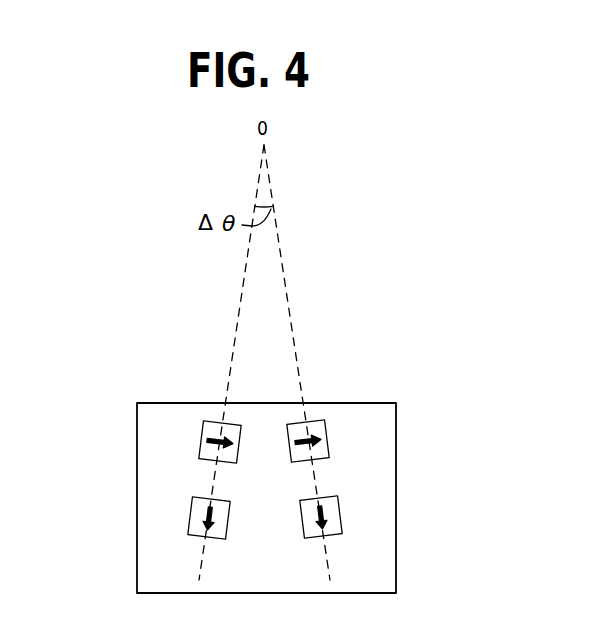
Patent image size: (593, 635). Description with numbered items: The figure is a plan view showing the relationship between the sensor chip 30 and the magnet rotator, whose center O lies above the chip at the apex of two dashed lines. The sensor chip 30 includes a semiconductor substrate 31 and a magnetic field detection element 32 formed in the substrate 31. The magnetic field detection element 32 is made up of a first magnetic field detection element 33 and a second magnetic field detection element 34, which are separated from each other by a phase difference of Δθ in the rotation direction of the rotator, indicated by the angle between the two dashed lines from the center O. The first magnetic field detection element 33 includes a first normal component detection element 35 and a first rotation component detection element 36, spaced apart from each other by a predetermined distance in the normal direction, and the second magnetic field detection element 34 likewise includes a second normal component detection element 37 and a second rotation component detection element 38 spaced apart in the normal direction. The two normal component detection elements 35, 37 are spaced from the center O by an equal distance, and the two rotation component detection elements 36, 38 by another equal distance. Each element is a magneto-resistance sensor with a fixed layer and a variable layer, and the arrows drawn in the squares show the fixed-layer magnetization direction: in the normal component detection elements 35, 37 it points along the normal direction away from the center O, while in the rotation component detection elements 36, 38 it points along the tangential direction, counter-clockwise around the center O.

The sensor chip 30 is at (443, 150).
The semiconductor substrate 31 is at (138, 410).
The magnetic field detection element 32 is at (190, 435).
The first magnetic field detection element 33 is at (85, 452).
The second magnetic field detection element 34 is at (450, 443).
The first normal component detection element 35 is at (189, 507).
The first rotation component detection element 36 is at (199, 450).
The second normal component detection element 37 is at (340, 515).
The second rotation component detection element 38 is at (328, 448).